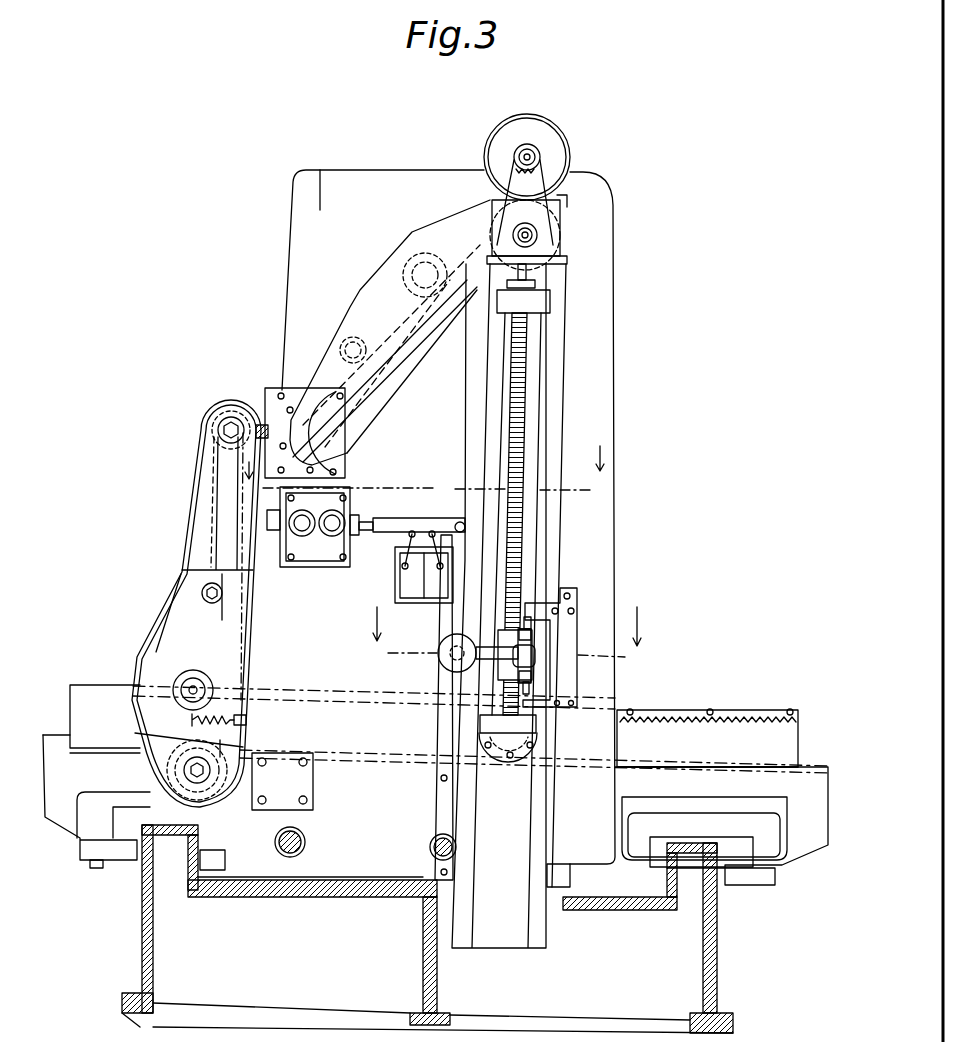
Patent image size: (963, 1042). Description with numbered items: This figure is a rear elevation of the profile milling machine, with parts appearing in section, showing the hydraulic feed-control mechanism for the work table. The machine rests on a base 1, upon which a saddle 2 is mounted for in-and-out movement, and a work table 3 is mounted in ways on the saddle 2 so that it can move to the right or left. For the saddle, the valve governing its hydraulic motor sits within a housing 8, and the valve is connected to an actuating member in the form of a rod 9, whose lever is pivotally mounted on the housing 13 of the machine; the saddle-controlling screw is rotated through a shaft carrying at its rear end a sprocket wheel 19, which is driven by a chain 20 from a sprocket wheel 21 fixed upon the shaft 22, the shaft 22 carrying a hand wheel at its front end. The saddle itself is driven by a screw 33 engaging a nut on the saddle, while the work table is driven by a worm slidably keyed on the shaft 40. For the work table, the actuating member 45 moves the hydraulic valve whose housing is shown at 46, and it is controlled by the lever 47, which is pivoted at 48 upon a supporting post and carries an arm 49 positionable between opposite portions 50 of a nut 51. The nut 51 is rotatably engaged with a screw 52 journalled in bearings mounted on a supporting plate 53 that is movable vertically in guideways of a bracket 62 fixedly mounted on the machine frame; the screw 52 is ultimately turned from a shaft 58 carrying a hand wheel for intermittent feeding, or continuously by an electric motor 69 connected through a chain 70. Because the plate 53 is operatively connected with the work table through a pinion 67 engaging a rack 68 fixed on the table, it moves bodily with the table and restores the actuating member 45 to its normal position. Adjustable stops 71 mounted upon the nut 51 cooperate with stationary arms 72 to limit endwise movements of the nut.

The base 1 is at (717, 953).
The saddle 2 is at (808, 833).
The work table 3 is at (87, 703).
The housing 8 is at (424, 474).
The rod 9 is at (508, 637).
The housing of the machine 13 is at (798, 745).
The sprocket wheel 19 is at (160, 773).
The chain 20 is at (490, 228).
The sprocket wheel 21 is at (216, 438).
The shaft 22 is at (222, 428).
The screw 33 is at (303, 840).
The shaft 40 is at (457, 847).
The actuating member 45 is at (413, 522).
The housing for the hydraulic valve 46 is at (350, 493).
The lever 47 is at (457, 610).
The pivot 48 is at (440, 665).
The arm 49 is at (535, 657).
The opposite portions of nut 50 is at (531, 638).
The nut 51 is at (533, 640).
The screw 52 is at (526, 390).
The supporting plate 53 is at (524, 278).
The shaft 58 is at (335, 437).
The bracket 62 is at (488, 800).
The pinion 67 is at (498, 753).
The rack 68 is at (732, 717).
The electric motor 69 is at (553, 142).
The chain 70 is at (543, 180).
The adjustable stops 71 is at (531, 620).
The stationary arms 72 is at (533, 603).